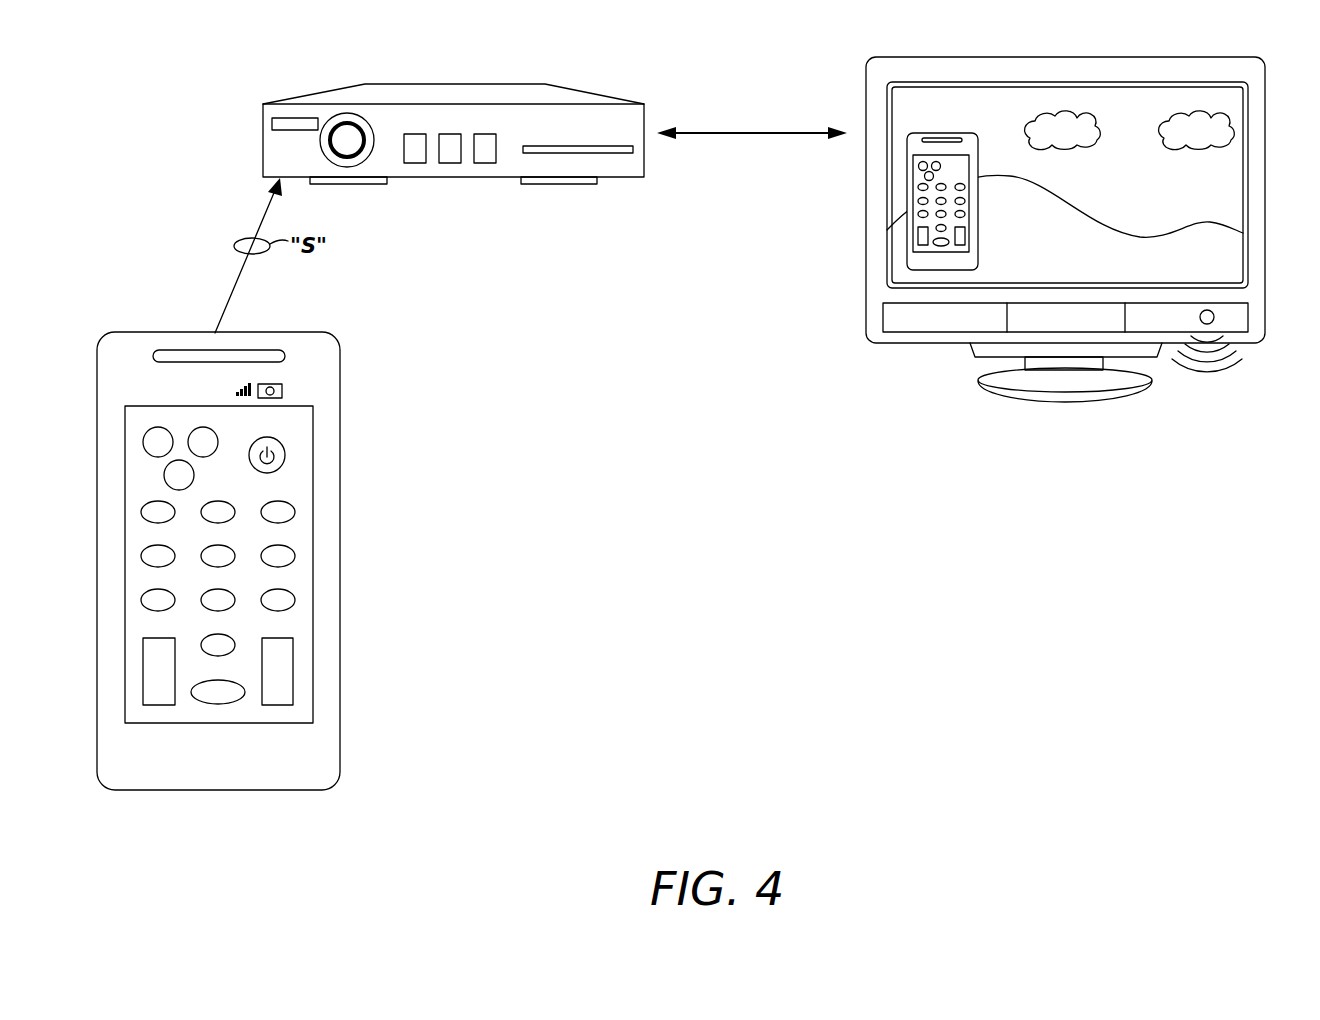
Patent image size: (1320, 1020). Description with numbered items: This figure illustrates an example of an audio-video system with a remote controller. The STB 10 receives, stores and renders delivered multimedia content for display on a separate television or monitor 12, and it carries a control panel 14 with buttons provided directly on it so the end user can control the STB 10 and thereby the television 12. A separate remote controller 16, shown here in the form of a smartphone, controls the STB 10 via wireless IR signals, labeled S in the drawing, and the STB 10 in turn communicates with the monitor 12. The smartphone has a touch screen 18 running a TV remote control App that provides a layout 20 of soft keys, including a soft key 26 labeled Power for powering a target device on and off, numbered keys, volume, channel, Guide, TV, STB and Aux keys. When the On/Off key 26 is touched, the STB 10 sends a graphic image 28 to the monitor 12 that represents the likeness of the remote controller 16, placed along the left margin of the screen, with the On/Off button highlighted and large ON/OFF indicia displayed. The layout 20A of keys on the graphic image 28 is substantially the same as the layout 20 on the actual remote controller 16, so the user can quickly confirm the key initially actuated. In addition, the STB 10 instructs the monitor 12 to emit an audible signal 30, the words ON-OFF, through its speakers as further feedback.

The STB 10 is at (444, 96).
The television or monitor 12 is at (1256, 57).
The control panel 14 is at (451, 162).
The remote controller 16 is at (320, 674).
The touch screen 18 is at (295, 533).
The layout of soft keys 20 is at (142, 472).
The layout of keys on the graphic image 20A is at (976, 213).
The soft key labeled Power 26 is at (285, 455).
The graphic image 28 is at (965, 260).
The audible sound 30 is at (1267, 392).